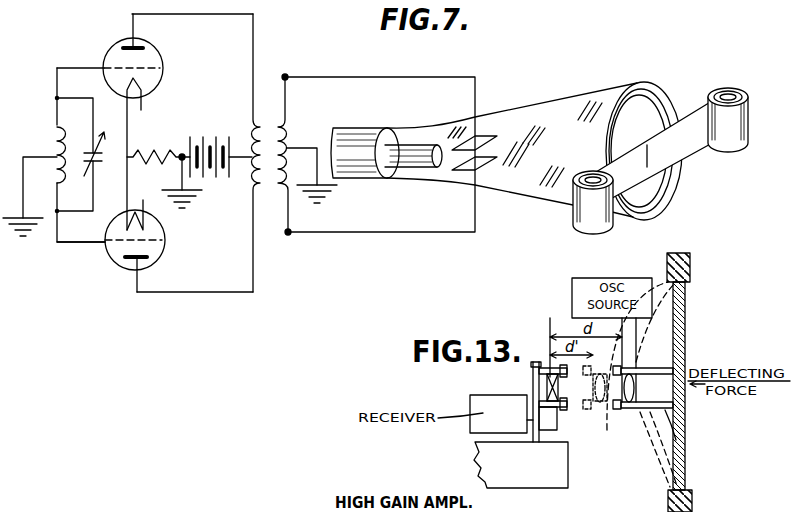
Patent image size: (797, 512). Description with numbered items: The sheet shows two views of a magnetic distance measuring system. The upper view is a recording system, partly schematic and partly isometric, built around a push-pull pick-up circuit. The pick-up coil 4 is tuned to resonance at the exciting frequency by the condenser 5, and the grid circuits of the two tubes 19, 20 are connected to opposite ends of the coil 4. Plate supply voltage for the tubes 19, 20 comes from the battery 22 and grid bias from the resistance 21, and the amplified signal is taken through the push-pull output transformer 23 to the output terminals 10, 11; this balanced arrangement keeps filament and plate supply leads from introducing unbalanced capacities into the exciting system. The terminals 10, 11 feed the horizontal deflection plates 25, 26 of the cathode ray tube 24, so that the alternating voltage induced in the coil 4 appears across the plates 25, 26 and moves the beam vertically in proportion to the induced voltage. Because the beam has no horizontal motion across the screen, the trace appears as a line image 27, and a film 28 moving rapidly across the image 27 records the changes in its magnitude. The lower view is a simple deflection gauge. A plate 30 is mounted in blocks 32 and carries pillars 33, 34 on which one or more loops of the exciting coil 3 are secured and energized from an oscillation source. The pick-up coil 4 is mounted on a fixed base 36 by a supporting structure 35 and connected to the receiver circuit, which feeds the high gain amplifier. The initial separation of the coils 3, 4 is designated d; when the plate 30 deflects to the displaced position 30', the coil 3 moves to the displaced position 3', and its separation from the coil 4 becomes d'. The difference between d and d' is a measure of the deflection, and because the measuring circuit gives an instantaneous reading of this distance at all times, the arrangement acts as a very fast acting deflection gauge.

In FIG. 7, the pick-up coil 4 is at (55, 138).
In FIG. 13, the pick-up coil 4 is at (549, 368).
In FIG. 7, the condenser 5 is at (99, 160).
In FIG. 7, the output terminal 10 is at (286, 75).
In FIG. 7, the output terminal 11 is at (283, 238).
In FIG. 7, the tube 19 is at (152, 52).
In FIG. 7, the tube 20 is at (166, 243).
In FIG. 7, the resistance 21 is at (164, 169).
In FIG. 7, the battery 22 is at (199, 140).
In FIG. 7, the push-pull output transformer 23 is at (265, 117).
In FIG. 7, the cathode ray tube 24 is at (560, 98).
In FIG. 7, the horizontal deflection plate 25 is at (483, 132).
In FIG. 7, the horizontal deflection plate 26 is at (485, 172).
In FIG. 7, the line image 27 is at (652, 152).
In FIG. 7, the film 28 is at (712, 89).
In FIG. 13, the coil 3 is at (628, 406).
In FIG. 13, the displaced position of coil 3 3' is at (630, 384).
In FIG. 13, the plate 30 is at (696, 386).
In FIG. 13, the displaced position of plate 30 30' is at (686, 342).
In FIG. 13, the blocks 32 is at (690, 265).
In FIG. 13, the pillar 33 is at (666, 378).
In FIG. 13, the pillar 34 is at (676, 440).
In FIG. 13, the supporting structure 35 is at (531, 367).
In FIG. 13, the fixed base 36 is at (557, 482).